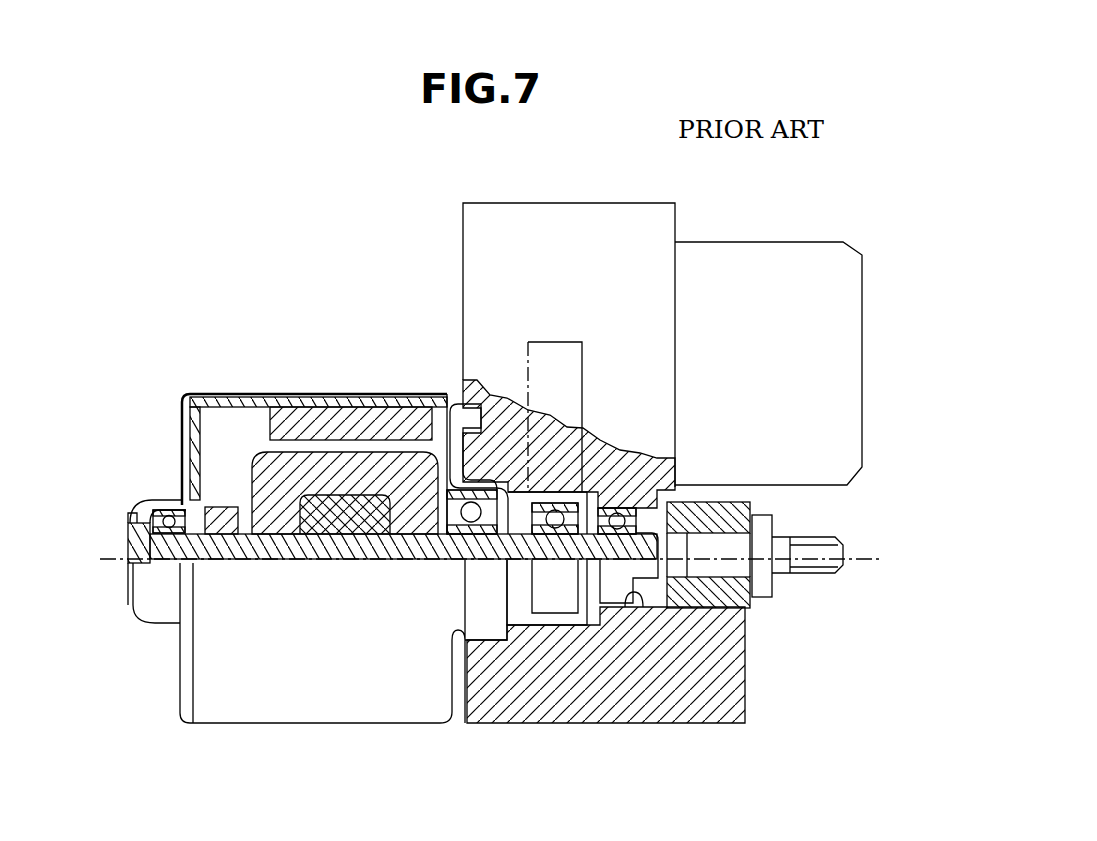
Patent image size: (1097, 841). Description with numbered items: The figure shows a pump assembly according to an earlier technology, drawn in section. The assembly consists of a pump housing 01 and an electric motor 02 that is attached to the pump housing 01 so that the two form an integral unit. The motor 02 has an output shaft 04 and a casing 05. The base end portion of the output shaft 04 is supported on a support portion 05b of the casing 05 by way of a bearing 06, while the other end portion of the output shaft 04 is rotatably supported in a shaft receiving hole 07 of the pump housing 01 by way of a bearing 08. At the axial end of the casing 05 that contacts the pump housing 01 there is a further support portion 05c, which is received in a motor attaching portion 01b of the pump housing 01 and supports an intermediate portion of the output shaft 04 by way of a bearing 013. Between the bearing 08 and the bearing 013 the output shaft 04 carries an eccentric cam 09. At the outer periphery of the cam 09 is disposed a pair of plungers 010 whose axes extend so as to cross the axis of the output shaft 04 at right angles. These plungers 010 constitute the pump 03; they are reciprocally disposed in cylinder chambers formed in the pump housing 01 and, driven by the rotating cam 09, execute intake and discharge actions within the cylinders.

The pump housing 01 is at (579, 200).
The plungers 010 is at (583, 403).
The motor attaching portion 01b is at (447, 633).
The electric motor 02 is at (234, 390).
The pump 03 is at (596, 348).
The output shaft 04 is at (345, 562).
The casing 05 is at (188, 432).
The support portion 05b is at (157, 610).
The support portion 05c is at (490, 612).
The bearing 06 is at (158, 499).
The shaft receiving hole 07 is at (634, 595).
The bearing 08 is at (640, 516).
The eccentric cam 09 is at (557, 600).
The bearing 013 is at (468, 518).